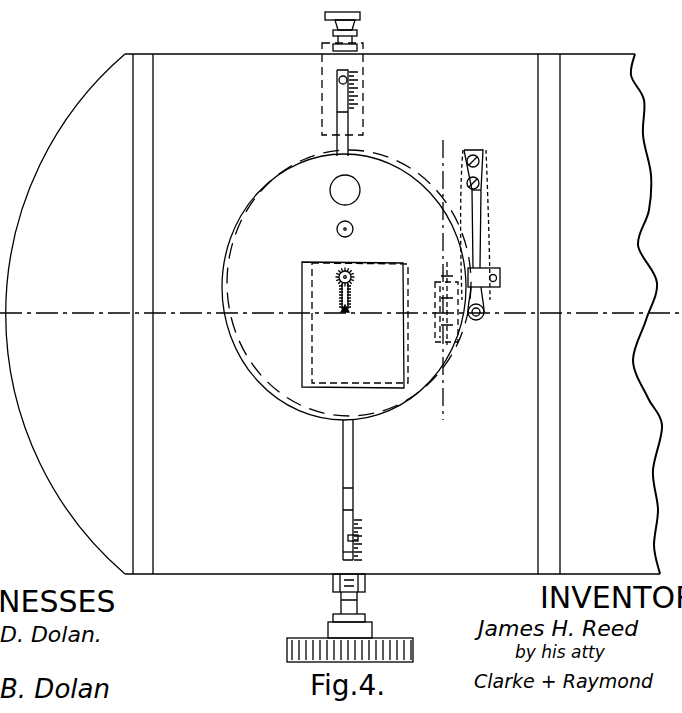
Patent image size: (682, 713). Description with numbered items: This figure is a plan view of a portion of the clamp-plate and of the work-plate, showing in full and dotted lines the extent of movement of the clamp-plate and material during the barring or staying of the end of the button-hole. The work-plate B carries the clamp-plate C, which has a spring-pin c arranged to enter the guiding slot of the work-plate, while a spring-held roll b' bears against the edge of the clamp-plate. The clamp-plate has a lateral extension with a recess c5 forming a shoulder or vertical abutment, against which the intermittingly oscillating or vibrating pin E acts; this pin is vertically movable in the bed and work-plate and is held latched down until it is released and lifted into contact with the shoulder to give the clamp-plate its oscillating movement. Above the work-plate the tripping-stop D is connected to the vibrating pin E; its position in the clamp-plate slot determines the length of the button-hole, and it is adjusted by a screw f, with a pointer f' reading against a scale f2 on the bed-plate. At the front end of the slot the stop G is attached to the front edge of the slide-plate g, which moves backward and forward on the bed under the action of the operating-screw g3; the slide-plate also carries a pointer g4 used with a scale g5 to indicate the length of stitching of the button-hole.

The work-plate B is at (246, 443).
The clamp-plate C is at (346, 285).
The spring-pin c is at (466, 258).
The recess c5 is at (441, 301).
The vibrating pin E is at (437, 313).
The spring-held roll b' is at (480, 252).
The screw f is at (353, 73).
The pointer f' is at (365, 74).
The scale f2 is at (358, 99).
The tripping-stop D is at (349, 128).
The stop G is at (354, 497).
The pointer g4 is at (363, 532).
The scale g5 is at (362, 549).
The slide-plate g is at (350, 552).
The operating-screw g3 is at (340, 594).